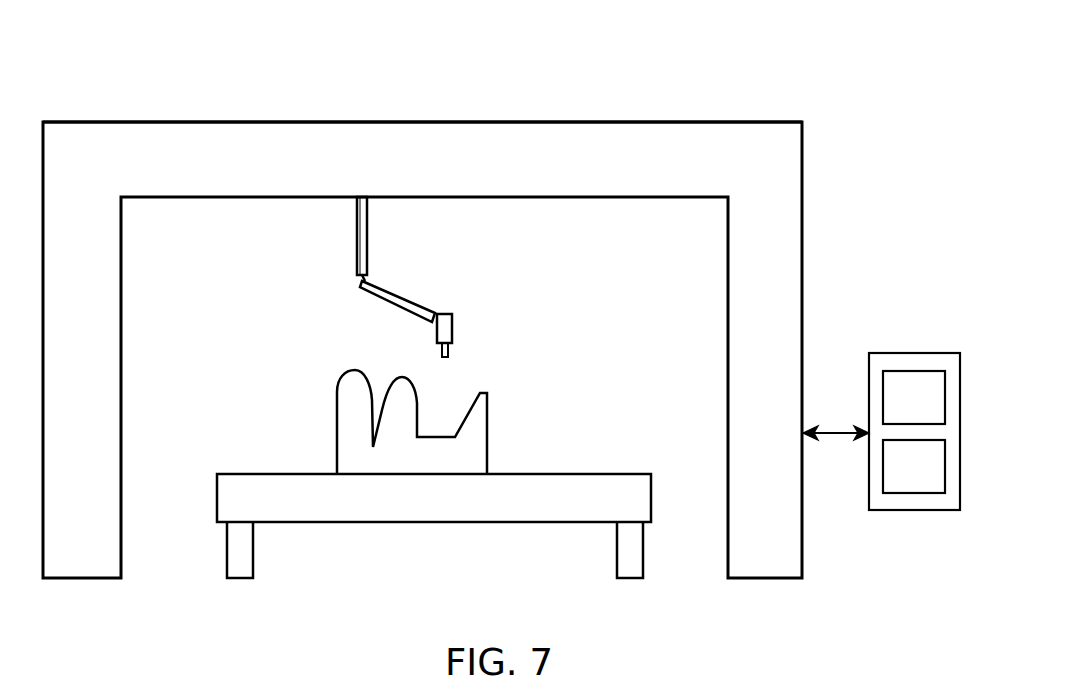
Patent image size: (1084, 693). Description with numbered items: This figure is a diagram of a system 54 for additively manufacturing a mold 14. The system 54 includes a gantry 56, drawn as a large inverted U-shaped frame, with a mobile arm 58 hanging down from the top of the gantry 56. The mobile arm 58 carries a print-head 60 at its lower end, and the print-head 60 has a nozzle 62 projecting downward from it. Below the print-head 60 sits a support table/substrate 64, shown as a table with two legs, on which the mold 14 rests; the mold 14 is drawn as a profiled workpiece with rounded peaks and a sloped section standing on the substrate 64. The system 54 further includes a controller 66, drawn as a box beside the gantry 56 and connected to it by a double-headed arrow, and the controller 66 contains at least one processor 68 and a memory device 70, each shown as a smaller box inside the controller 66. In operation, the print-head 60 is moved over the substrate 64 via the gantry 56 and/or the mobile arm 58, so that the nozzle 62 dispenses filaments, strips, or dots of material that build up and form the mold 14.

The mold 14 is at (337, 428).
The system 54 is at (688, 67).
The gantry 56 is at (421, 121).
The mobile arm 58 is at (368, 232).
The print-head 60 is at (453, 321).
The nozzle 62 is at (450, 350).
The support table/substrate 64 is at (573, 473).
The controller 66 is at (913, 352).
The processor 68 is at (929, 409).
The memory device 70 is at (928, 479).